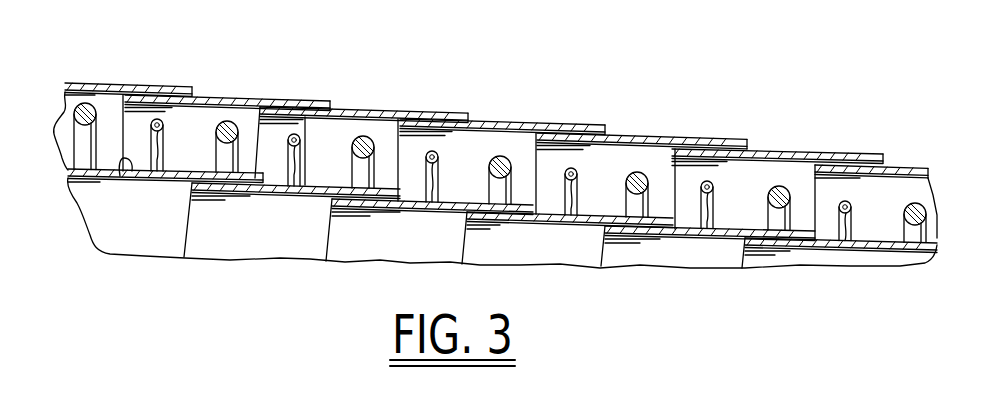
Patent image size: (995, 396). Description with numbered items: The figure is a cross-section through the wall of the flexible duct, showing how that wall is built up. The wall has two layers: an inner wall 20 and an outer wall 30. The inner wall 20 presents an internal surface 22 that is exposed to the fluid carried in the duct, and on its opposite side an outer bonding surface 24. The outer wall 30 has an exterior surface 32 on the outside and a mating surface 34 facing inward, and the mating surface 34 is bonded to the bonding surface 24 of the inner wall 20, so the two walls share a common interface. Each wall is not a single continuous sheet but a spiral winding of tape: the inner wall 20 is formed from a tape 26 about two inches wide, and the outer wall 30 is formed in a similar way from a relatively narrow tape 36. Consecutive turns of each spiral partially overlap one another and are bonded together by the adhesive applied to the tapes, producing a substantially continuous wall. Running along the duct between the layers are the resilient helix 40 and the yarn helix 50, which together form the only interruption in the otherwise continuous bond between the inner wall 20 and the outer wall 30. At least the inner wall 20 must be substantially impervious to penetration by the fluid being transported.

The inner wall 20 is at (313, 232).
The internal surface 22 is at (285, 193).
The outer bonding surface 24 is at (126, 179).
The tape 26 is at (673, 233).
The outer wall 30 is at (547, 93).
The exterior surface 32 is at (162, 99).
The mating surface 34 is at (151, 106).
The tape 36 is at (770, 152).
The resilient helix 40 is at (232, 121).
The yarn helix 50 is at (305, 117).